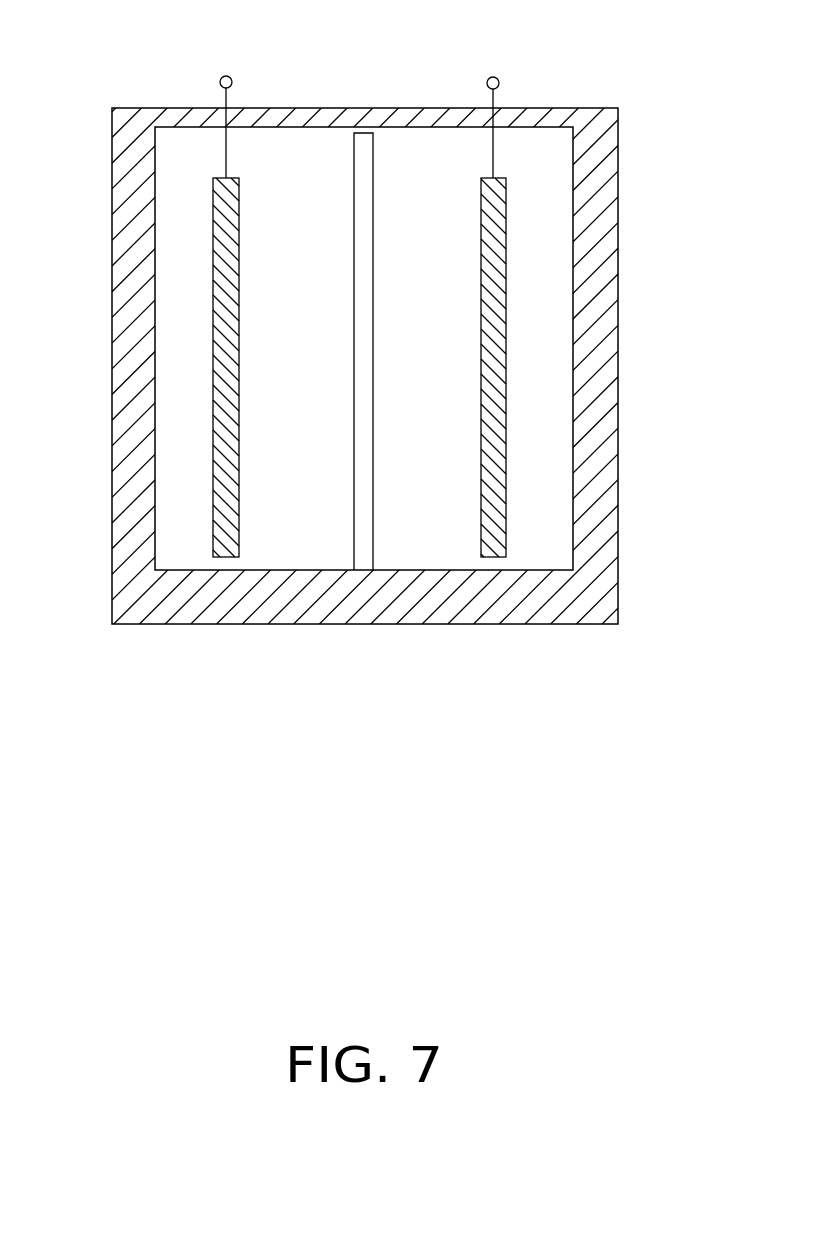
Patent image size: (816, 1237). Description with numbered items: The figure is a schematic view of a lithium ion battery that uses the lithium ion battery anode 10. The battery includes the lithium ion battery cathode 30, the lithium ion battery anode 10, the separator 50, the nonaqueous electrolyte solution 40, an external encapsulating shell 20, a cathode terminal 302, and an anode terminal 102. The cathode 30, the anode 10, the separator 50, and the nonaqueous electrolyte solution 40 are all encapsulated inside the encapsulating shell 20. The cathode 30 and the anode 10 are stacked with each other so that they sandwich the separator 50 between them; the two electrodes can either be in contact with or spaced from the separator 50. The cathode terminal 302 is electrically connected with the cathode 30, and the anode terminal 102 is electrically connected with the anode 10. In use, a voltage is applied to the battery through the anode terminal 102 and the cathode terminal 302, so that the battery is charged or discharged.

The lithium ion battery anode 10 is at (225, 372).
The anode terminal 102 is at (226, 76).
The external encapsulating shell 20 is at (605, 203).
The lithium ion battery cathode 30 is at (492, 375).
The cathode terminal 302 is at (494, 77).
The nonaqueous electrolyte solution 40 is at (453, 470).
The separator 50 is at (363, 185).